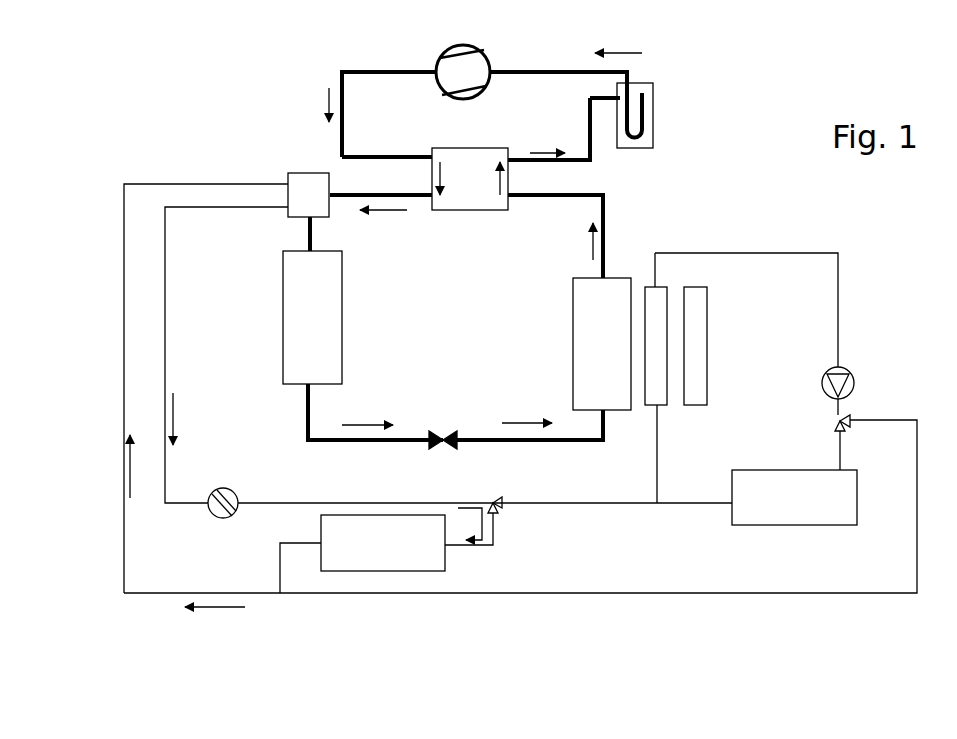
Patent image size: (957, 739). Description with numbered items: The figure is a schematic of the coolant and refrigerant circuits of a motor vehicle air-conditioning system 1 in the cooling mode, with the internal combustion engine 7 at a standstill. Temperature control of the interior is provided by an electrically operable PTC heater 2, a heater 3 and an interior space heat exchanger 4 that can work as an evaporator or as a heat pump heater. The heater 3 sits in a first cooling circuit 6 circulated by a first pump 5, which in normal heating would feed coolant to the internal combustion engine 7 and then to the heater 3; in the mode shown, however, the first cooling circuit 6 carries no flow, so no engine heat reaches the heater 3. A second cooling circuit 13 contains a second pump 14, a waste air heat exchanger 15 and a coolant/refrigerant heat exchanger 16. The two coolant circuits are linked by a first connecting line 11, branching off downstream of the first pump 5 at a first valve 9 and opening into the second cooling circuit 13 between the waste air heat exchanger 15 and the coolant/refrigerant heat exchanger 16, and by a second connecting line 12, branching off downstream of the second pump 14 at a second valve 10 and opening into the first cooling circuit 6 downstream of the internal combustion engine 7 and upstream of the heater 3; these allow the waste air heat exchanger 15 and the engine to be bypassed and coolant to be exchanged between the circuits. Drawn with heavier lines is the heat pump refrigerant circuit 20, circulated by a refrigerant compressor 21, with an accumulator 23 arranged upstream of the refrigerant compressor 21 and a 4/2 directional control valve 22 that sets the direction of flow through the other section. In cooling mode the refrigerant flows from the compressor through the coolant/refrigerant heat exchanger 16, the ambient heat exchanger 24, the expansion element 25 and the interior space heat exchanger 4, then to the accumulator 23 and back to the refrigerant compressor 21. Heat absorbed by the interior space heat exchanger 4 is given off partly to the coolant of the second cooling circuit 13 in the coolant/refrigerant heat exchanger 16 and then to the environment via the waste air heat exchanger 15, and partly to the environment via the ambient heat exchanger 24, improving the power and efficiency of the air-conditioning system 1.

The motor vehicle air-conditioning system 1 is at (708, 188).
The PTC heater 2 is at (698, 352).
The heater 3 is at (660, 377).
The interior space heat exchanger 4 is at (602, 344).
The first pump 5 is at (837, 377).
The first cooling circuit 6 is at (830, 285).
The internal combustion engine 7 is at (794, 497).
The first valve 9 is at (835, 427).
The second valve 10 is at (500, 507).
The first connecting line 11 is at (723, 595).
The second connecting line 12 is at (580, 498).
The second cooling circuit 13 is at (197, 453).
The second pump 14 is at (237, 490).
The waste air heat exchanger 15 is at (386, 550).
The coolant/refrigerant heat exchanger 16 is at (307, 197).
The heat pump refrigerant circuit 20 is at (305, 132).
The refrigerant compressor 21 is at (458, 70).
The 4/2 directional control valve 22 is at (470, 179).
The accumulator 23 is at (643, 108).
The ambient heat exchanger 24 is at (312, 317).
The expansion element 25 is at (443, 431).